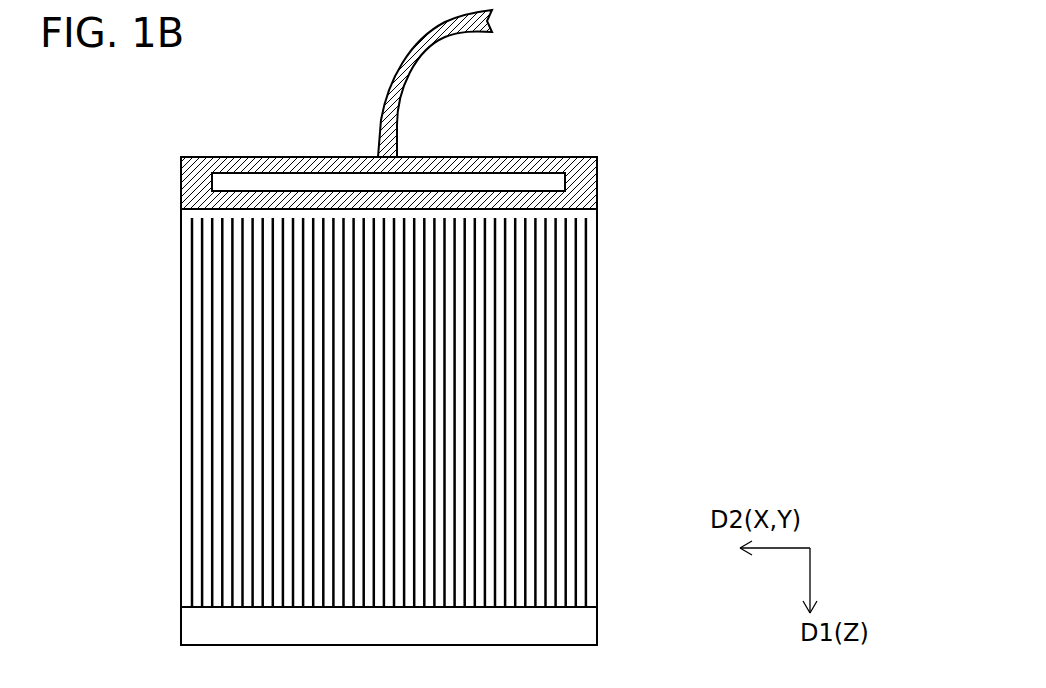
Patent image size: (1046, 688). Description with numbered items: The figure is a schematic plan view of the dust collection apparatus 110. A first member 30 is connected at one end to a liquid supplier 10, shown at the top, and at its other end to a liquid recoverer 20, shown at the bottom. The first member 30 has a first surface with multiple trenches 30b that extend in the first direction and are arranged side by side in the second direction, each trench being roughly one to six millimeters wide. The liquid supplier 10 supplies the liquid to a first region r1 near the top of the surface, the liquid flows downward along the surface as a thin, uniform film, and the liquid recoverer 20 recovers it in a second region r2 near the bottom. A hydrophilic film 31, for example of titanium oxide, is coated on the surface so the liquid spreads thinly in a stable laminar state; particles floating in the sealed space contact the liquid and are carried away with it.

The dust collection apparatus 110 is at (620, 118).
The liquid supplier 10 is at (477, 157).
The first region r1 is at (513, 213).
The first member 30 is at (614, 360).
The film 31 is at (592, 264).
The trenches 30b is at (561, 406).
The second region r2 is at (577, 598).
The liquid recoverer 20 is at (585, 626).